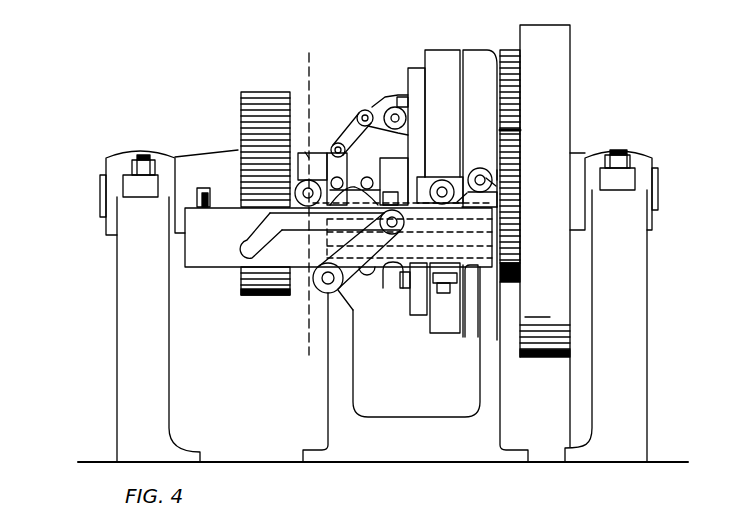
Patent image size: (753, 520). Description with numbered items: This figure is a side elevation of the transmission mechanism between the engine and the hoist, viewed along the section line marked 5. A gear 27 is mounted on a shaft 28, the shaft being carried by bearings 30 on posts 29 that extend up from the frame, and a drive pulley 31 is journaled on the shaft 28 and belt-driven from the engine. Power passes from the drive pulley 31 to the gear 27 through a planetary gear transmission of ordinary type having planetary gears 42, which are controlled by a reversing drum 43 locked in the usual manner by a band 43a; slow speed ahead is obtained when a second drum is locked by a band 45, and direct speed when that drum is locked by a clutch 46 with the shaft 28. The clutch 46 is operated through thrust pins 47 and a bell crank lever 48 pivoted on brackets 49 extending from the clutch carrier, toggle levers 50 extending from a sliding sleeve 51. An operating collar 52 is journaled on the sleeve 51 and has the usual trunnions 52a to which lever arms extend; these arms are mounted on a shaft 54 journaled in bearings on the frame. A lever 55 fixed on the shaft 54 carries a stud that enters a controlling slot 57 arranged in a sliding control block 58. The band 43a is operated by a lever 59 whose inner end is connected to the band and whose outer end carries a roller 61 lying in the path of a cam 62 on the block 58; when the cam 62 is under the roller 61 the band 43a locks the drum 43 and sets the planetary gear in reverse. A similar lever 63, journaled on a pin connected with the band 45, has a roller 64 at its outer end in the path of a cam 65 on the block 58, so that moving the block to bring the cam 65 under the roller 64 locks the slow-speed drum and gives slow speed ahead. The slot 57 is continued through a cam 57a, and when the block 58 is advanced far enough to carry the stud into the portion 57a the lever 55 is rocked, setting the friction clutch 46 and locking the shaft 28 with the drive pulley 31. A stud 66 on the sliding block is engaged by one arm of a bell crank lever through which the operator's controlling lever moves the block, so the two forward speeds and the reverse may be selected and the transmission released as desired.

The section line 5- 5 is at (305, 211).
The gear 27 is at (241, 97).
The shaft 28 is at (100, 192).
The posts 29 is at (117, 357).
The bearings 30 is at (174, 154).
The drive pulley 31 is at (571, 96).
The planetary gears 42 is at (517, 132).
The reversing drum 43 is at (488, 50).
The band 43a is at (474, 60).
The band 45 is at (438, 51).
The clutch 46 is at (401, 158).
The thrust pins 47 is at (404, 95).
The bell crank lever 48 is at (391, 106).
The brackets 49 is at (376, 108).
The toggle levers 50 is at (338, 143).
The sliding sleeve 51 is at (322, 152).
The operating collar 52 is at (323, 152).
The trunnions 52a is at (305, 152).
The shaft 54 is at (345, 284).
The lever 55 is at (360, 279).
The controlling slot 57 is at (294, 233).
The cam 57a is at (247, 233).
The sliding control block 58 is at (230, 268).
The lever 59 is at (500, 173).
The roller 61 is at (492, 182).
The cam 62 is at (482, 197).
The lever 63 is at (470, 170).
The roller 64 is at (442, 180).
The cam 65 is at (353, 192).
The stud 66 is at (202, 188).